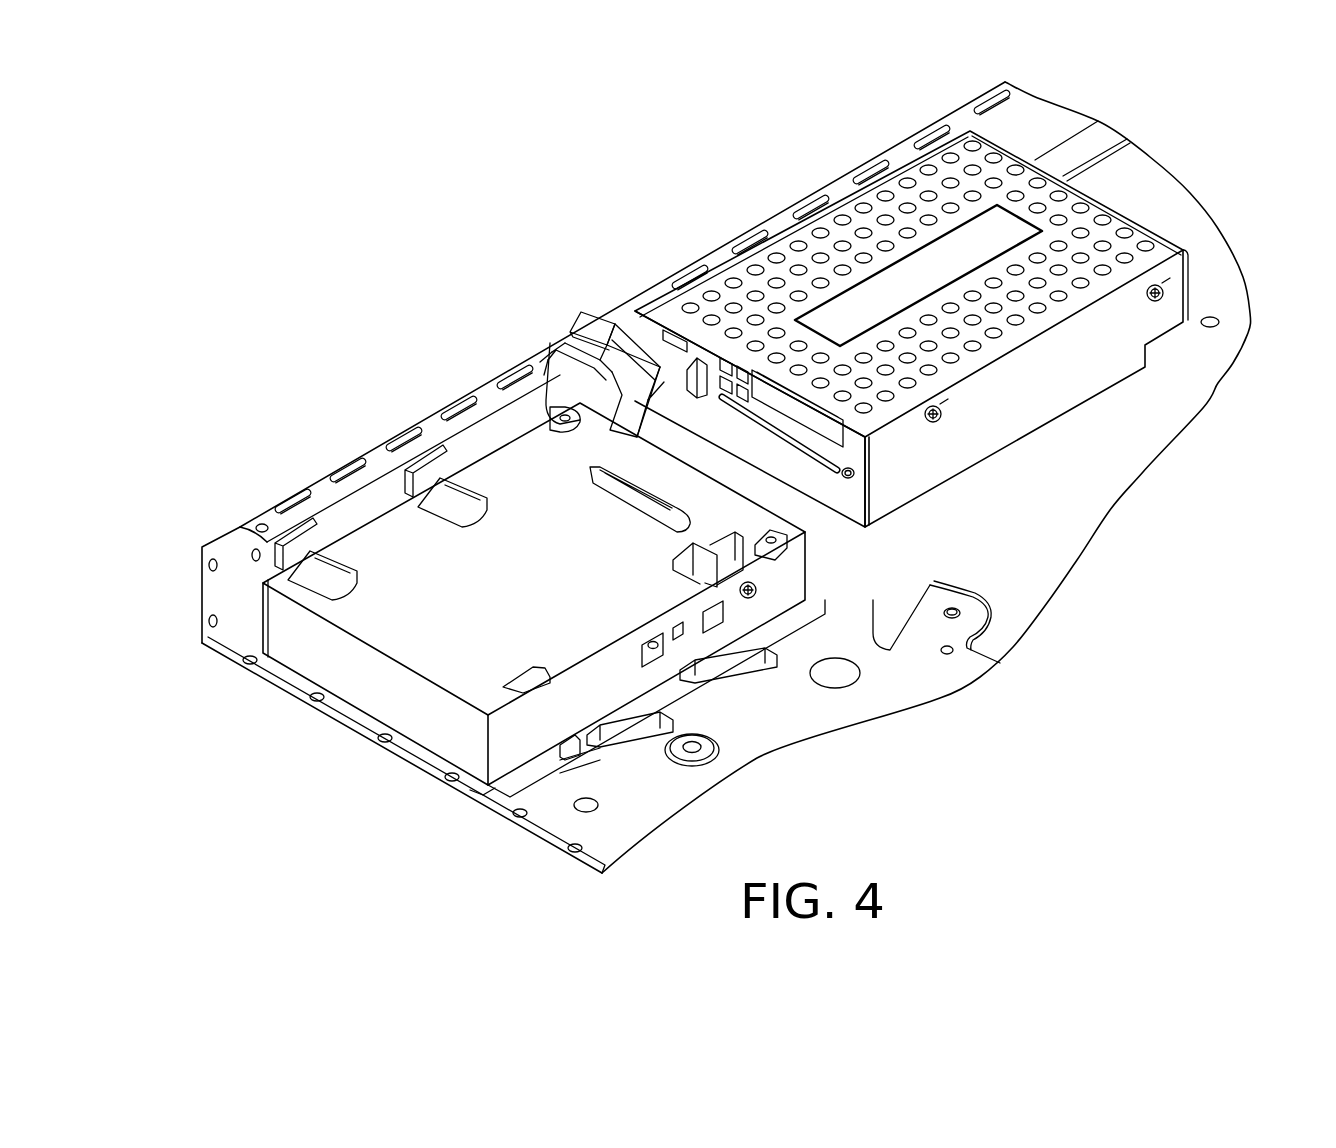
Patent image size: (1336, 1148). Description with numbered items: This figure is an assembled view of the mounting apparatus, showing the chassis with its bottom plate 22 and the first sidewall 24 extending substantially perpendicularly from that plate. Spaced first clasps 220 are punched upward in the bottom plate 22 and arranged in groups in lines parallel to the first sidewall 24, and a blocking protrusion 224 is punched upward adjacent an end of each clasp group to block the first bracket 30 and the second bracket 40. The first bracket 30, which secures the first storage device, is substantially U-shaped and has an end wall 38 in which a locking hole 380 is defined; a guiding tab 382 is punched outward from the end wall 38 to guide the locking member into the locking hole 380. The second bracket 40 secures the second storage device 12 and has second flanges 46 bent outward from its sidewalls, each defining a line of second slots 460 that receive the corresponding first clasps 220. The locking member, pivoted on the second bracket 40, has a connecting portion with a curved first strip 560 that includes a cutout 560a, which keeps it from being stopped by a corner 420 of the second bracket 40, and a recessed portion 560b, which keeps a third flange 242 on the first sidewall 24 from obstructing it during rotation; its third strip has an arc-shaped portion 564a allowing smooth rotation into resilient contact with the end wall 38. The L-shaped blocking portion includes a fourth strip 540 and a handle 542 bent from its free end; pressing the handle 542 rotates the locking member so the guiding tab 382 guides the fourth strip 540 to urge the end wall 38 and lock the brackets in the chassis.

The second storage device 12 is at (375, 682).
The bottom plate 22 is at (777, 717).
The first sidewall 24 is at (230, 555).
The first bracket 30 is at (936, 367).
The end wall 38 is at (845, 495).
The second bracket 40 is at (353, 612).
The second flanges 46 is at (600, 733).
The first clasps 220 is at (570, 758).
The blocking protrusion 224 is at (482, 792).
The third flange 242 is at (543, 360).
The locking hole 380 is at (670, 325).
The guiding tab 382 is at (698, 362).
The corner 420 is at (547, 437).
The second slots 460 is at (540, 760).
The fourth strip 540 is at (622, 350).
The handle 542 is at (572, 310).
The first strip 560 is at (540, 407).
The cutout 560a is at (513, 372).
The recessed portion 560b is at (553, 350).
The arc-shaped portion 564a is at (636, 352).